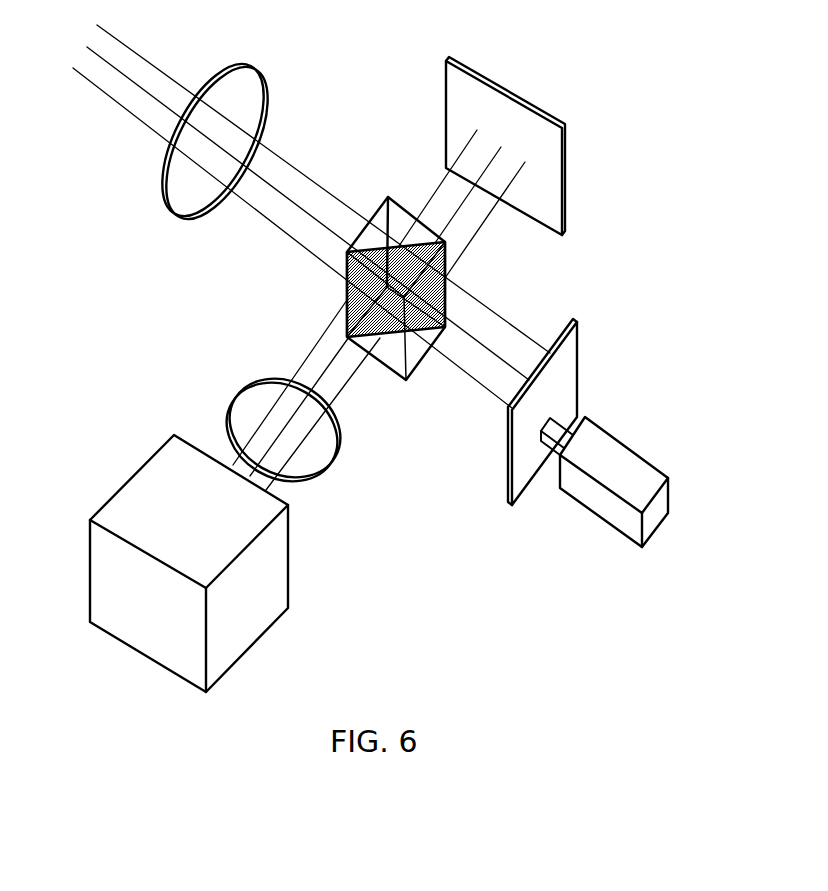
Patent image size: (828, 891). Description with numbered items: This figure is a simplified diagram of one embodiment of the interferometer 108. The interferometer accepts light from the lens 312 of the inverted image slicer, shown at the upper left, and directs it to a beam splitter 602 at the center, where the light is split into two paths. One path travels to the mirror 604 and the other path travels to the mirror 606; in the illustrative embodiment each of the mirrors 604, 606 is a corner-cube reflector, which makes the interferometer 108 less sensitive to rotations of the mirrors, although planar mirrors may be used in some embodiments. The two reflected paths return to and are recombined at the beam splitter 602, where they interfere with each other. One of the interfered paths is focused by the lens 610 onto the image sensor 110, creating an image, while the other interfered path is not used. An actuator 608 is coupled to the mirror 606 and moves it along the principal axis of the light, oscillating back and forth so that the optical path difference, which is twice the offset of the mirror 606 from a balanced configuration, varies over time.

The interferometer 108 is at (169, 312).
The image sensor 110 is at (195, 447).
The lens 312 is at (170, 186).
The beam splitter 602 is at (408, 206).
The mirror 604 is at (530, 107).
The mirror 606 is at (578, 321).
The actuator 608 is at (653, 458).
The lens 610 is at (275, 385).